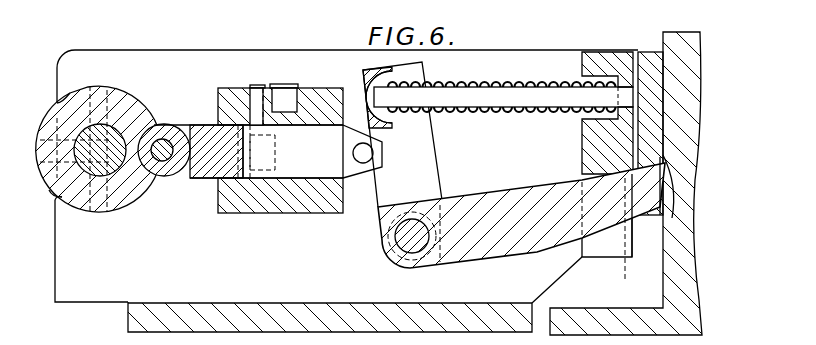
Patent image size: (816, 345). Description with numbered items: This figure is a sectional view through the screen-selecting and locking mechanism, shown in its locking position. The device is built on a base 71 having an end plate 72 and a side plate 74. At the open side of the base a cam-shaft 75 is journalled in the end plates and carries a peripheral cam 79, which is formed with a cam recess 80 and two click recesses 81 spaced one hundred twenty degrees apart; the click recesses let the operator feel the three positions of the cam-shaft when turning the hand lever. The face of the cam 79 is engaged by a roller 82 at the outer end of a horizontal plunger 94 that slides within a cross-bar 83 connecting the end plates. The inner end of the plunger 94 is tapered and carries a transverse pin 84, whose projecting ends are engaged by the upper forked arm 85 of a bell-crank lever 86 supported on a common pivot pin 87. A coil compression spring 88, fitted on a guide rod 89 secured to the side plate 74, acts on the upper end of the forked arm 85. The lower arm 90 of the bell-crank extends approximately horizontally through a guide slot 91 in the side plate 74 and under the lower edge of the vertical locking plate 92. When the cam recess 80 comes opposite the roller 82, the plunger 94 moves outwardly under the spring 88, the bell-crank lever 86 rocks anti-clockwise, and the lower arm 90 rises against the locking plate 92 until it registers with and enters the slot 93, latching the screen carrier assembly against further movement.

The base 71 is at (380, 259).
The end plate 72 is at (317, 72).
The side plate 74 is at (616, 45).
The cam-shaft 75 is at (58, 198).
The peripheral cam 79 is at (53, 122).
The cam recess 80 is at (153, 125).
The click recess 81 is at (70, 100).
The roller 82 is at (167, 178).
The cross-bar 83 is at (315, 192).
The transverse pin 84 is at (360, 163).
The upper forked arm 85 is at (412, 153).
The bell-crank lever 86 is at (383, 264).
The common pivot pin 87 is at (413, 240).
The coil compression spring 88 is at (475, 82).
The guide rod 89 is at (548, 98).
The lower arm 90 is at (497, 250).
The guide slot 91 is at (602, 248).
The vertical locking plate 92 is at (660, 208).
The slot 93 is at (630, 238).
The horizontal plunger 94 is at (210, 180).